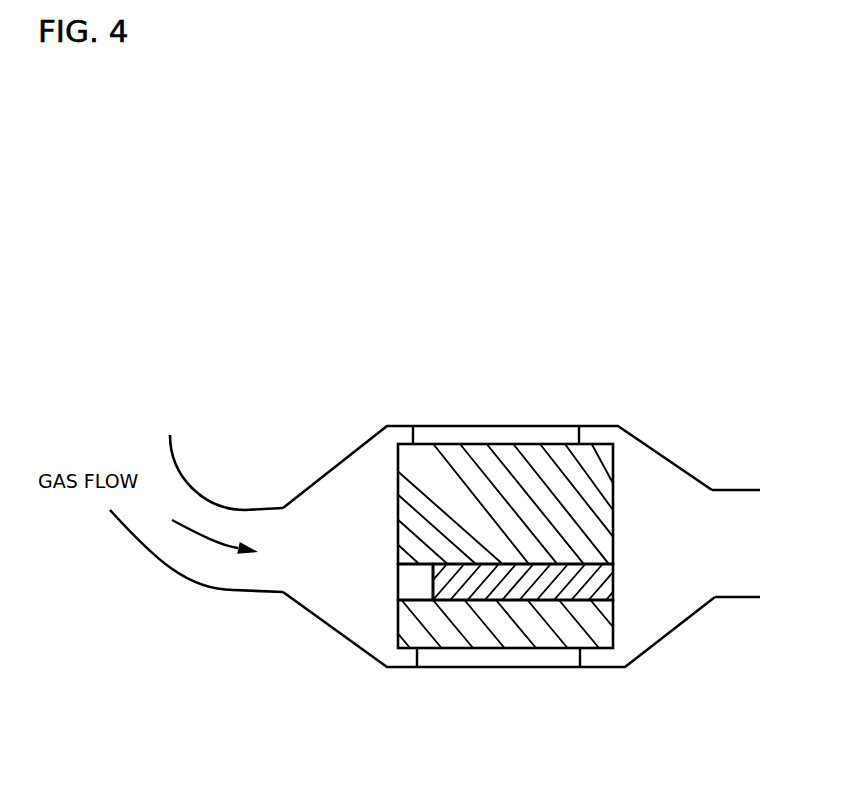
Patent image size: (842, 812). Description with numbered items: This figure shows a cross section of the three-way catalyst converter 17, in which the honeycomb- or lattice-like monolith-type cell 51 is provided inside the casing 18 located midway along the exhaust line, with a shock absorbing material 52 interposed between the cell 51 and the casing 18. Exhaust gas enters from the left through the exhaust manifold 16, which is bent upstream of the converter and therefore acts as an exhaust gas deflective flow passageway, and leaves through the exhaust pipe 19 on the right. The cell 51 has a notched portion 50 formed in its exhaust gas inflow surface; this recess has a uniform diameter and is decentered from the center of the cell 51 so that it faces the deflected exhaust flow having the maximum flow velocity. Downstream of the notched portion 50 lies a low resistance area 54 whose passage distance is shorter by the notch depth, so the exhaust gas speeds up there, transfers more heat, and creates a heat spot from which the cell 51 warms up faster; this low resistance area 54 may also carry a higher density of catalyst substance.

The exhaust manifold 16 is at (183, 573).
The three-way catalyst converter 17 is at (354, 411).
The casing 18 is at (398, 426).
The exhaust pipe 19 is at (743, 597).
The notched portion 50 is at (405, 587).
The cell 51 is at (613, 478).
The shock absorbing material 52 is at (500, 432).
The low resistance area 54 is at (528, 588).